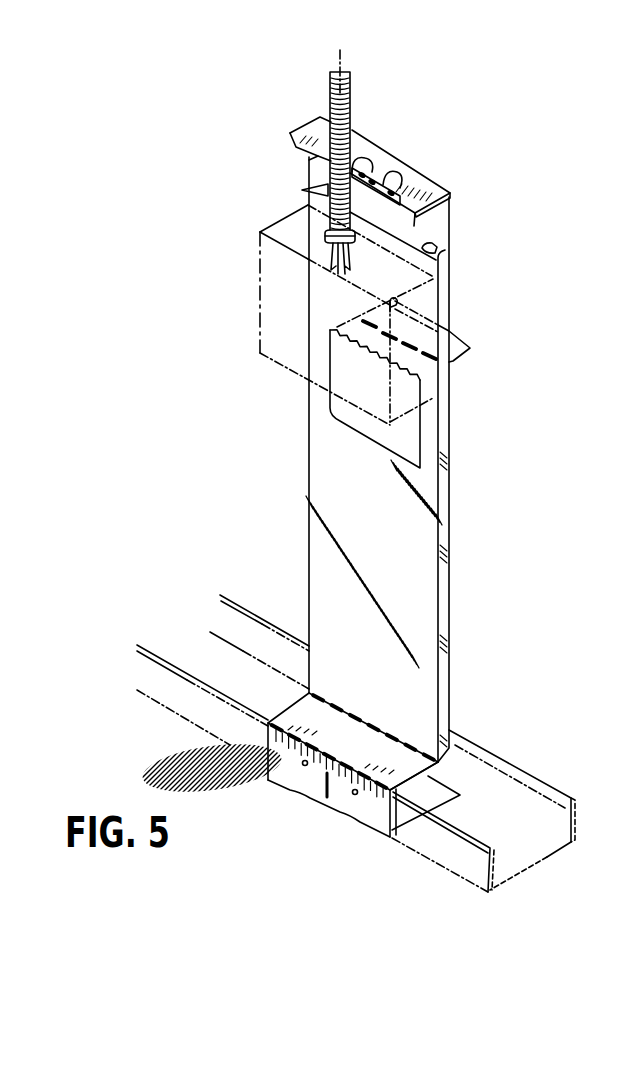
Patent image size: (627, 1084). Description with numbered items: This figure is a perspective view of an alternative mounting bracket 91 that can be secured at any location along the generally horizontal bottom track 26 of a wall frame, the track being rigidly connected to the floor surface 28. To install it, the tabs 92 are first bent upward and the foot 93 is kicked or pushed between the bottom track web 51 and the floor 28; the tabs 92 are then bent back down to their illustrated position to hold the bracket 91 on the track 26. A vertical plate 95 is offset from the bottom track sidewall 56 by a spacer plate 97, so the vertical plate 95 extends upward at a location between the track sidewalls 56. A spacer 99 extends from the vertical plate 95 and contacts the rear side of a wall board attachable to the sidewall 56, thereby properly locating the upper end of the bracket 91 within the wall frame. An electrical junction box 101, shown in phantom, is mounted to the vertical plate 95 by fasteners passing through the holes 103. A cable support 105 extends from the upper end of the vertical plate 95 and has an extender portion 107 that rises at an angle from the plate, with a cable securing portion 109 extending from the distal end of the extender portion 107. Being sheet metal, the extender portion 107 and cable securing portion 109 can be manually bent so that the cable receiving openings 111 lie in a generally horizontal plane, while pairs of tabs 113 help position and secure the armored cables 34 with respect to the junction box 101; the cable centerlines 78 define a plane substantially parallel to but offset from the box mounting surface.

The bottom track 26 is at (178, 716).
The floor surface 28 is at (282, 826).
The armored cable 34 is at (331, 104).
The web portion 51 is at (555, 853).
The bottom track sidewall 56 is at (216, 714).
The centerline 78 is at (348, 72).
The mounting bracket 91 is at (450, 512).
The tabs 92 is at (424, 818).
The foot 93 is at (443, 792).
The vertical plate 95 is at (426, 596).
The spacer plate 97 is at (350, 748).
The spacer 99 is at (456, 362).
The electrical junction box 101 is at (258, 231).
The holes 103 is at (388, 305).
The cable support 105 is at (412, 166).
The extender portion 107 is at (437, 245).
The cable securing portion 109 is at (312, 128).
The cable receiving openings 111 is at (373, 156).
The tabs 113 is at (312, 191).